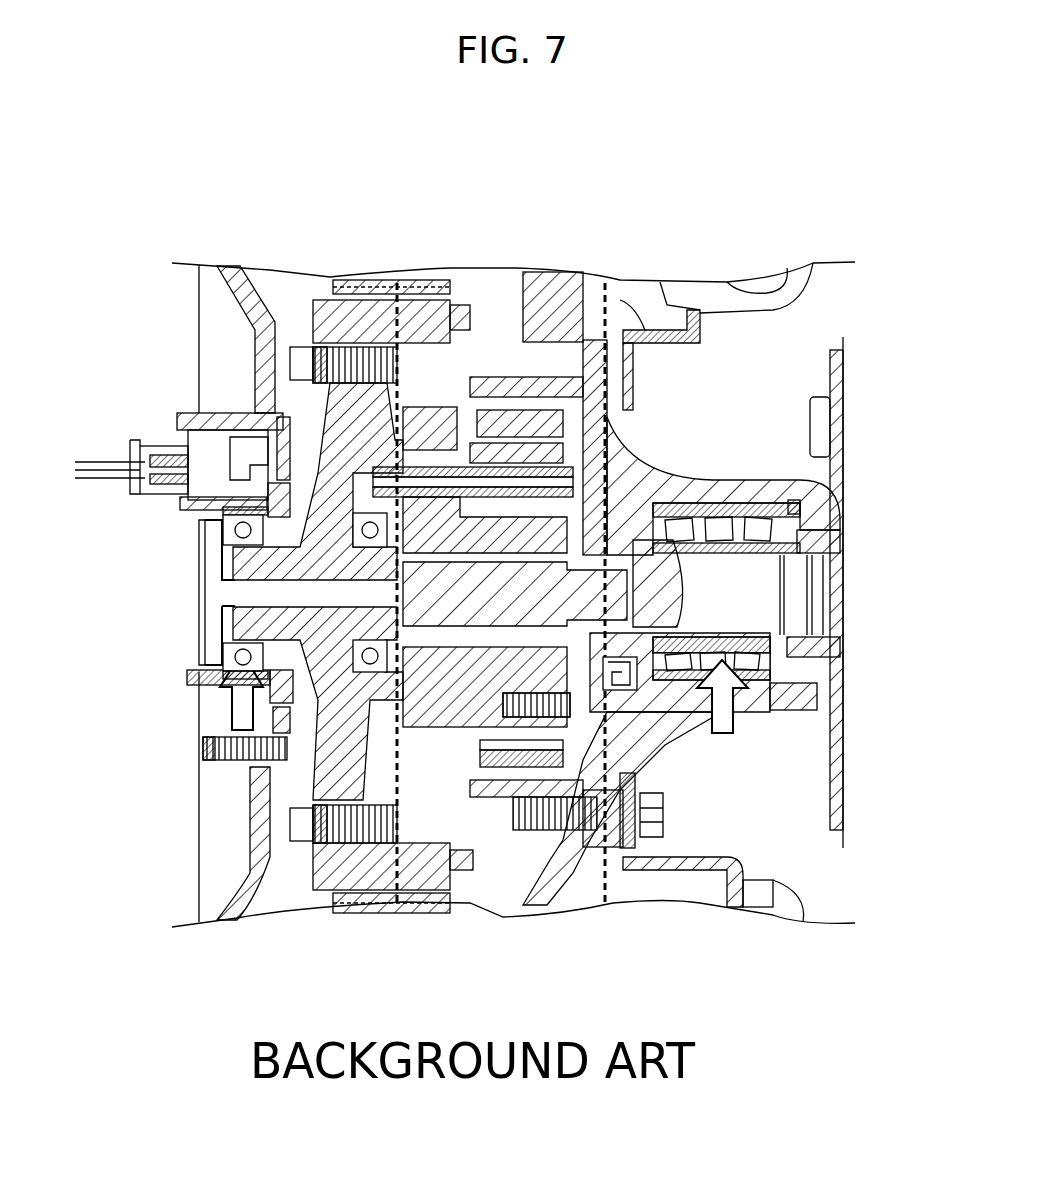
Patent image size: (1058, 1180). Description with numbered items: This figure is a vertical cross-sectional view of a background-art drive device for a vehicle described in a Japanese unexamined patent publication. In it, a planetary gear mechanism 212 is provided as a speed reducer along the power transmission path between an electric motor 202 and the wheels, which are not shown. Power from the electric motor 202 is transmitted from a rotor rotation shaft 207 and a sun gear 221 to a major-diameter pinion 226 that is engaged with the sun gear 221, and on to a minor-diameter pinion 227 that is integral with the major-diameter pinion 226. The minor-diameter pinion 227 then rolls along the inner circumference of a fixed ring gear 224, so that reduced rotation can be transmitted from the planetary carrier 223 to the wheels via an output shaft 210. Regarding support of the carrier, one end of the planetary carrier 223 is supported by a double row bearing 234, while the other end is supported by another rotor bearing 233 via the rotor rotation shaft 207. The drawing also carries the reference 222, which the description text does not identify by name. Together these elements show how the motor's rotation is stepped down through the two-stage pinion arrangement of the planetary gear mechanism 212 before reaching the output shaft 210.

The electric motor 202 is at (345, 268).
The rotor rotation shaft 207 is at (273, 560).
The output shaft 210 is at (760, 610).
The planetary gear mechanism 212 is at (441, 812).
The sun gear 221 is at (447, 640).
The gear plate 222 is at (468, 428).
The planetary carrier 223 is at (604, 463).
The fixed ring gear 224 is at (540, 412).
The major-diameter pinion 226 is at (450, 532).
The minor-diameter pinion 227 is at (517, 523).
The rotor bearing 233 is at (205, 663).
The double row bearing 234 is at (760, 513).